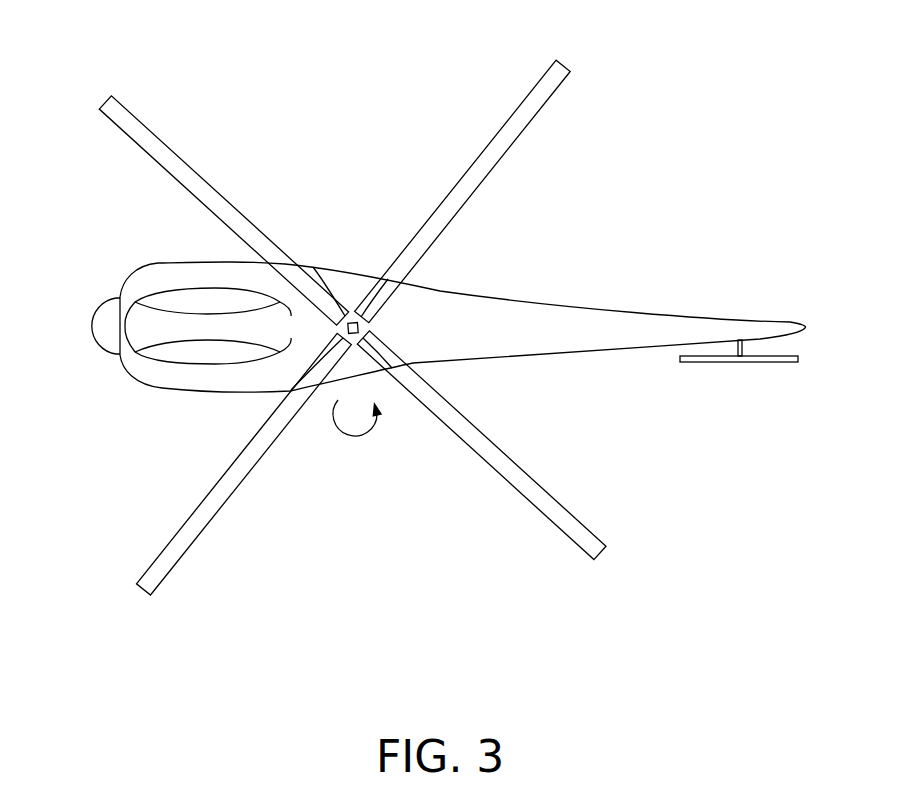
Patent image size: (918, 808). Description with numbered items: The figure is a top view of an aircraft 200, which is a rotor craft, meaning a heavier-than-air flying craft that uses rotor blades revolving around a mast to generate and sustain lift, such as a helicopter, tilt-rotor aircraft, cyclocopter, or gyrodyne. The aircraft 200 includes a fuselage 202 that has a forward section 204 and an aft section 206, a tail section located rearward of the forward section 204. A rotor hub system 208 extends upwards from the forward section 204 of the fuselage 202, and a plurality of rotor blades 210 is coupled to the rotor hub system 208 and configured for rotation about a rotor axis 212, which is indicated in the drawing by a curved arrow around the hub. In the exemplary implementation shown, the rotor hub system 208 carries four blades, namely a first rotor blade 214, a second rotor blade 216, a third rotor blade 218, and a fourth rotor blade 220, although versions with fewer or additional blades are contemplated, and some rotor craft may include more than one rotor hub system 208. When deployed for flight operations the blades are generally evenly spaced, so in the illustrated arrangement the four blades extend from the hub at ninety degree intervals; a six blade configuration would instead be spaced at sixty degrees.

The aircraft 200 is at (335, 74).
The fuselage 202 is at (200, 390).
The forward section 204 is at (160, 263).
The aft section 206 is at (741, 318).
The rotor hub system 208 is at (352, 296).
The plurality of rotor blades 210 is at (508, 502).
The rotor axis 212 is at (336, 428).
The first rotor blade 214 is at (570, 511).
The second rotor blade 216 is at (546, 102).
The third rotor blade 218 is at (130, 112).
The fourth rotor blade 220 is at (175, 563).